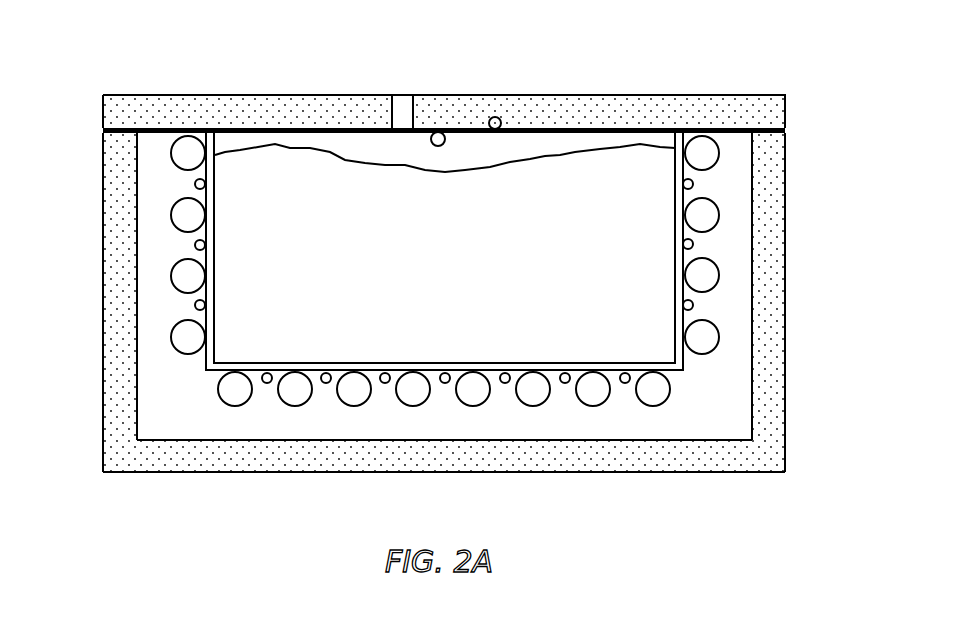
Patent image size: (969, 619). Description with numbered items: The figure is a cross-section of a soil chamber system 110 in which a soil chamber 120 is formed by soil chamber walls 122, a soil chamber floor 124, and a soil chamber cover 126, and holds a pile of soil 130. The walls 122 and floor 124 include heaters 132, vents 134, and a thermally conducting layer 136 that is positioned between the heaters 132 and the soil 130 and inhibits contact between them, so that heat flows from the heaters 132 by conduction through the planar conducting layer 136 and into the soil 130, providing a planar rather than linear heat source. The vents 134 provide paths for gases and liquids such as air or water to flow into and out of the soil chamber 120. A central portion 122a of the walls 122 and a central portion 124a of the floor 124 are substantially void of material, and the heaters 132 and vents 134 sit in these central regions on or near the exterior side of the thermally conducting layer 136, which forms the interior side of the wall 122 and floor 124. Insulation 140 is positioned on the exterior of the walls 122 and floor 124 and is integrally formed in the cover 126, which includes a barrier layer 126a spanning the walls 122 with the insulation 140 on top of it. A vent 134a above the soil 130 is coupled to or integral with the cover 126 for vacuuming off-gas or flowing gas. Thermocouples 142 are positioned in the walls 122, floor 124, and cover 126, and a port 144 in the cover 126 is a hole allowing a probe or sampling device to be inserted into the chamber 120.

The soil chamber system 110 is at (445, 265).
The soil chamber 120 is at (444, 251).
The soil chamber walls 122 is at (134, 186).
The central portion of walls 122a is at (163, 302).
The soil chamber floor 124 is at (478, 442).
The central portion of floor 124a is at (390, 427).
The soil chamber cover 126 is at (519, 93).
The barrier layer 126a is at (549, 134).
The soil 130 is at (466, 243).
The heaters 132 is at (203, 276).
The vents 134 is at (205, 185).
The vent 134a is at (437, 147).
The thermally conducting layer 136 is at (215, 227).
The insulation 140 is at (267, 96).
The thermocouples 142 is at (204, 246).
The port 144 is at (398, 93).